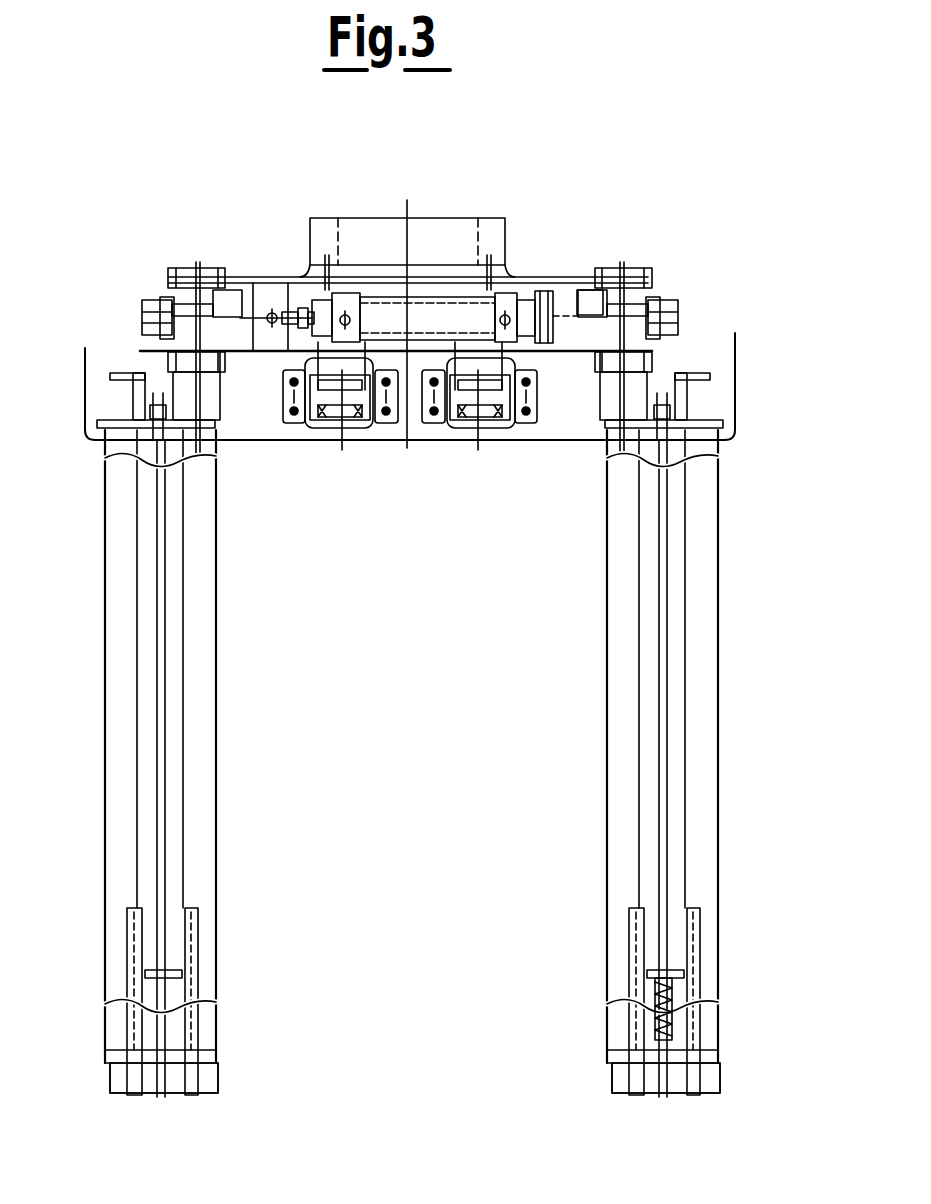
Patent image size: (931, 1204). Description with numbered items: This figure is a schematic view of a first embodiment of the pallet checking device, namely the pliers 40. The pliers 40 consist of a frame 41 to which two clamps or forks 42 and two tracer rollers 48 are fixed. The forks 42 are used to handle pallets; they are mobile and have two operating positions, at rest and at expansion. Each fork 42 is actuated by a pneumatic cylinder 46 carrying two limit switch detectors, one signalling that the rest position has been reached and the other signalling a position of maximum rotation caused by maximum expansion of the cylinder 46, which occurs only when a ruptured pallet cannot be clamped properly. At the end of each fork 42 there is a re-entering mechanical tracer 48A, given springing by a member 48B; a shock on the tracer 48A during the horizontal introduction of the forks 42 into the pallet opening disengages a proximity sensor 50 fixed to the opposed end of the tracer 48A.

The pliers 40 is at (465, 198).
The frame 41 is at (559, 302).
The clamps or forks 42 is at (192, 690).
The pneumatic cylinder 46 is at (385, 300).
The tracer rollers 48 is at (365, 422).
The re-entering mechanical tracer 48A is at (207, 1080).
The springing member 48B is at (672, 1030).
The proximity sensor 50 is at (660, 400).